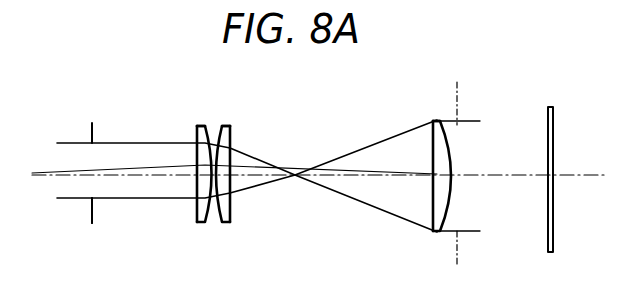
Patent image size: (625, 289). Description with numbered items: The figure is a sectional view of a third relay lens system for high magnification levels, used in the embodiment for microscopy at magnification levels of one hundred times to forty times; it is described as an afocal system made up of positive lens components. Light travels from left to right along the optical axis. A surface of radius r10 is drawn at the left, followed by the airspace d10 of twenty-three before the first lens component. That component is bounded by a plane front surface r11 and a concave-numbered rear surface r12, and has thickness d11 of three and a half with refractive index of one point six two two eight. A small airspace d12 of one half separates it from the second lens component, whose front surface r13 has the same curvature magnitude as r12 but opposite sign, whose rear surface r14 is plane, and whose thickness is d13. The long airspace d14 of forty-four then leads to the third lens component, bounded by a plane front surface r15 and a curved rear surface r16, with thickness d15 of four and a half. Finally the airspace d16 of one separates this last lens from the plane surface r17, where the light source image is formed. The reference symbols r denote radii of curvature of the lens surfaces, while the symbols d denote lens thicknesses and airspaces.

The airspace d10 is at (152, 176).
The lens thickness d11 is at (199, 150).
The airspace d12 is at (214, 170).
The lens thickness d13 is at (228, 150).
The airspace d14 is at (328, 173).
The lens thickness d15 is at (439, 170).
The airspace d16 is at (457, 178).
The radius of curvature r10 is at (92, 210).
The radius of curvature r11 is at (196, 212).
The radius of curvature r12 is at (206, 217).
The radius of curvature r13 is at (221, 217).
The radius of curvature r14 is at (231, 212).
The radius of curvature r15 is at (433, 228).
The radius of curvature r16 is at (446, 226).
The radius of curvature r17 is at (457, 253).